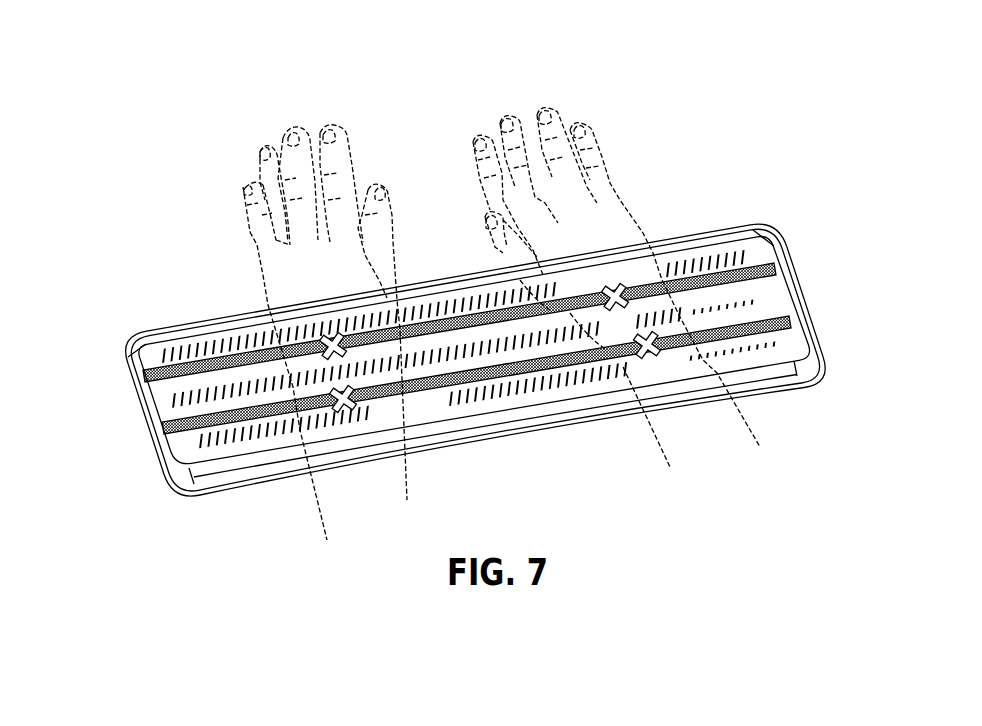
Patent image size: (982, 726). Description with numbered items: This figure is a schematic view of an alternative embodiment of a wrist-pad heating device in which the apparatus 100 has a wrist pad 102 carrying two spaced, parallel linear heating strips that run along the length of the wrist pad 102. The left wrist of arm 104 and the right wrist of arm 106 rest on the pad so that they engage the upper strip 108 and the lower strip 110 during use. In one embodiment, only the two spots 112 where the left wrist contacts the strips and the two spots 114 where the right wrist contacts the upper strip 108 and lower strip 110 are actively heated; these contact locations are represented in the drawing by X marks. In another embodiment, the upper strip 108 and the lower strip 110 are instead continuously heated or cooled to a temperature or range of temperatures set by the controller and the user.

The apparatus 100 is at (162, 213).
The wrist pad 102 is at (197, 353).
The arm 104 is at (325, 540).
The arm 106 is at (660, 452).
The upper strip 108 is at (753, 268).
The lower strip 110 is at (763, 323).
The spots 112 is at (340, 412).
The spots 114 is at (650, 360).